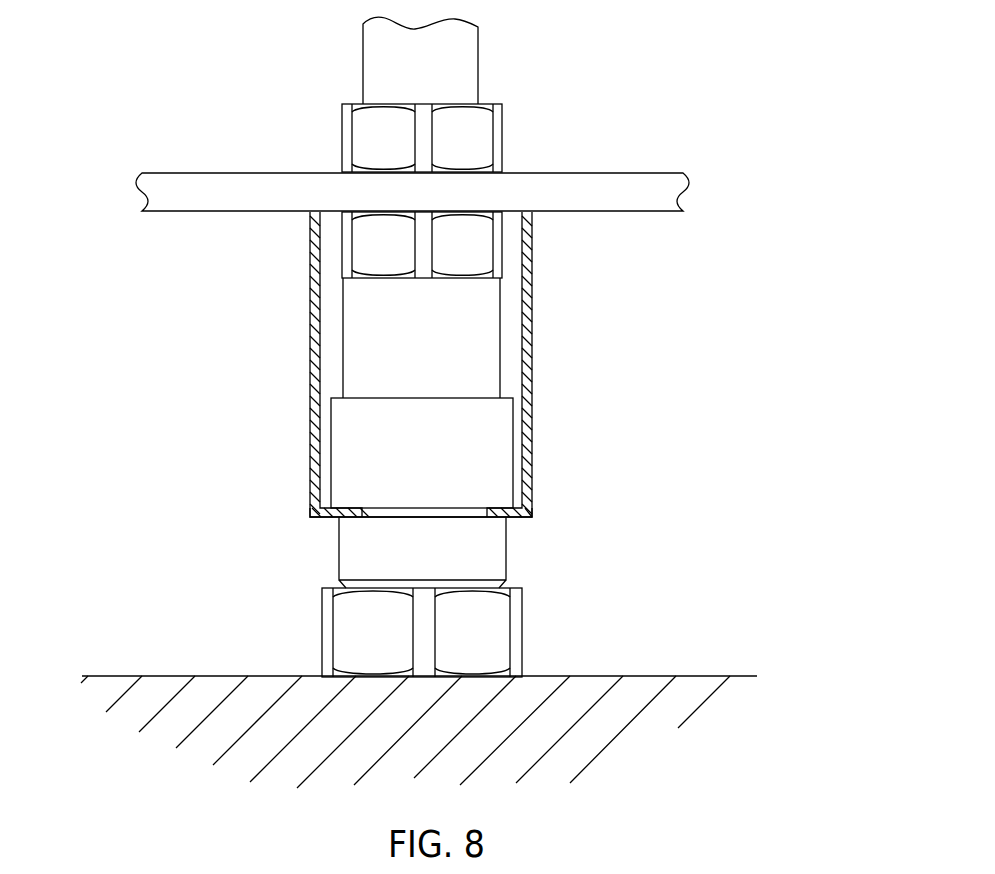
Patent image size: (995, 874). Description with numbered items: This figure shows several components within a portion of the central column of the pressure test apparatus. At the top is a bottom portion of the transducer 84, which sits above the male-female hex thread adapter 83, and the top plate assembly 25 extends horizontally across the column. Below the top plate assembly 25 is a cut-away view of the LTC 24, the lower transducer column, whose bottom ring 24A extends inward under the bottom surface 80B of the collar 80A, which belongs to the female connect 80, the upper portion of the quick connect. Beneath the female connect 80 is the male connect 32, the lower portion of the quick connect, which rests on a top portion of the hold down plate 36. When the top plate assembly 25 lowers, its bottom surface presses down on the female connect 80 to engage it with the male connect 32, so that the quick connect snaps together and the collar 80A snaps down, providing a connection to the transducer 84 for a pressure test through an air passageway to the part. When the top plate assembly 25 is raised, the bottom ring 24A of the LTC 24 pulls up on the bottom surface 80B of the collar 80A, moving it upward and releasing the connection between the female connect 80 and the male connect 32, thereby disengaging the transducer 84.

The transducer 84 is at (457, 61).
The male-female hex thread adapter 83 is at (502, 138).
The top plate assembly 25 is at (655, 170).
The LTC (lower transducer column) 24 is at (545, 320).
The bottom ring 24A is at (522, 506).
The female connect 80 is at (415, 400).
The collar 80A is at (490, 444).
The bottom surface 80B is at (512, 518).
The male connect 32 is at (523, 645).
The hold down plate 36 is at (680, 708).